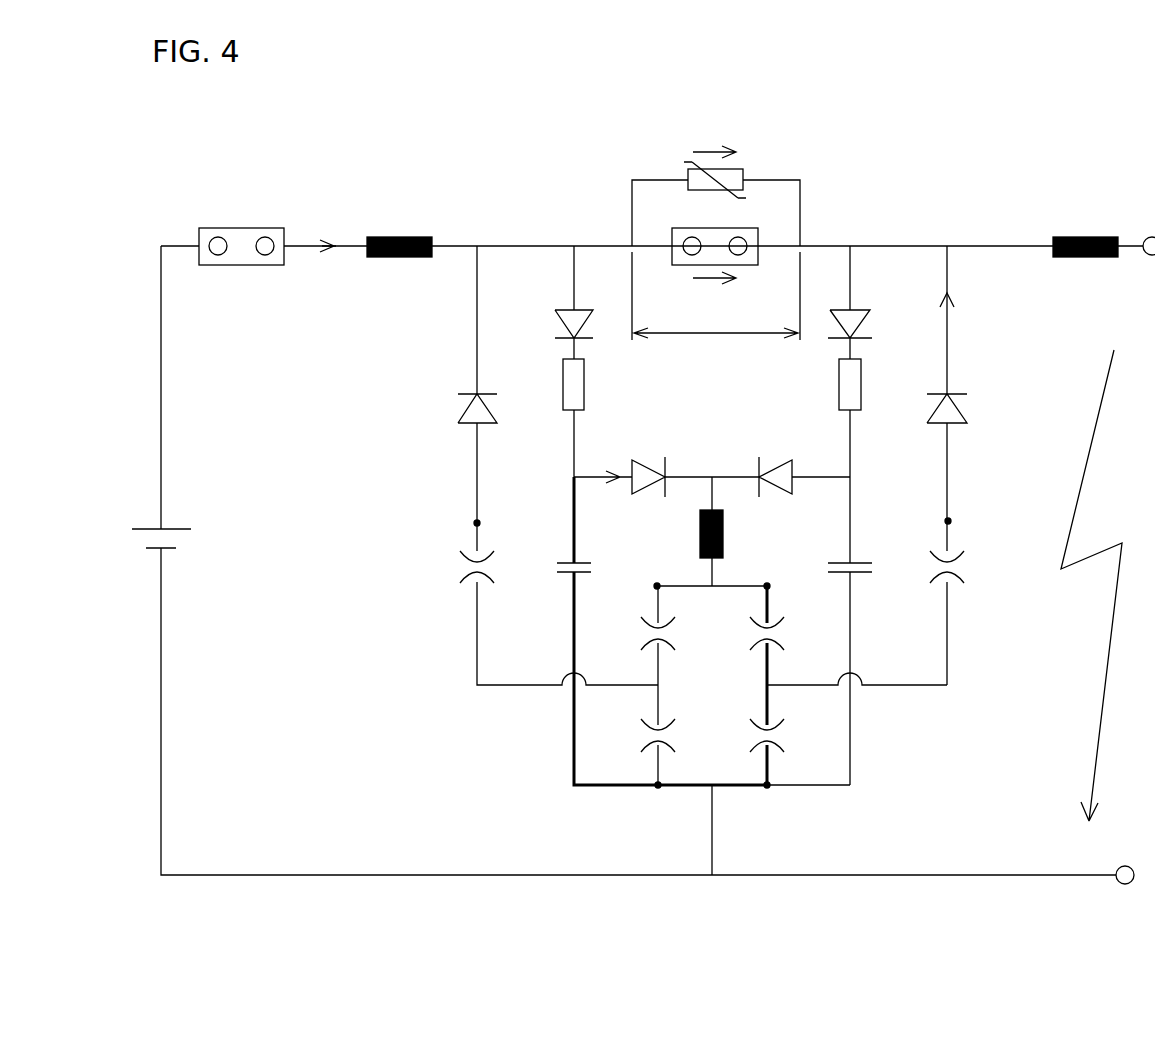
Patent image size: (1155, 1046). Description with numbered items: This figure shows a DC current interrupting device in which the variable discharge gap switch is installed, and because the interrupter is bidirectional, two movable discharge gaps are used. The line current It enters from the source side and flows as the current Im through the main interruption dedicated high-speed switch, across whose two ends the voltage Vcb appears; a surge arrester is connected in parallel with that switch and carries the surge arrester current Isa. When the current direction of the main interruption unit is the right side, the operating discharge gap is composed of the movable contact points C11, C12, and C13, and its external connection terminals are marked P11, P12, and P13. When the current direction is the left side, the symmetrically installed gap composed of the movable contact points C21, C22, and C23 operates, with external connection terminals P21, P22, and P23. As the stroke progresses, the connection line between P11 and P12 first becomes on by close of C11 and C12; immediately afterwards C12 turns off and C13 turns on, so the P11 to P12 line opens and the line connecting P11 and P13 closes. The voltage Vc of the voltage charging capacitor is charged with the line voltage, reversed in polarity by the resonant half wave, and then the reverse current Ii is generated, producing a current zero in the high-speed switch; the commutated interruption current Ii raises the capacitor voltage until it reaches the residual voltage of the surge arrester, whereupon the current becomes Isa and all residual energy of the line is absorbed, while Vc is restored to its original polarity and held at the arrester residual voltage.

The movable contact point C11 is at (794, 736).
The movable contact point C12 is at (794, 634).
The movable contact point C13 is at (976, 568).
The movable contact point C21 is at (627, 736).
The movable contact point C22 is at (627, 634).
The movable contact point C23 is at (445, 568).
The external connection terminal P11 is at (767, 807).
The external connection terminal P12 is at (767, 569).
The external connection terminal P13 is at (980, 524).
The external connection terminal P21 is at (653, 807).
The external connection terminal P22 is at (653, 569).
The external connection terminal P23 is at (445, 525).
The voltage of the voltage charging capacitor Vc is at (554, 583).
The line current It is at (327, 269).
The surge arrester current Isa is at (713, 140).
The main interruption unit current Im is at (714, 293).
The voltage applied to both ends of the main interruption dedicated high-speed switc Vcb is at (716, 312).
The reverse current Ii is at (957, 321).